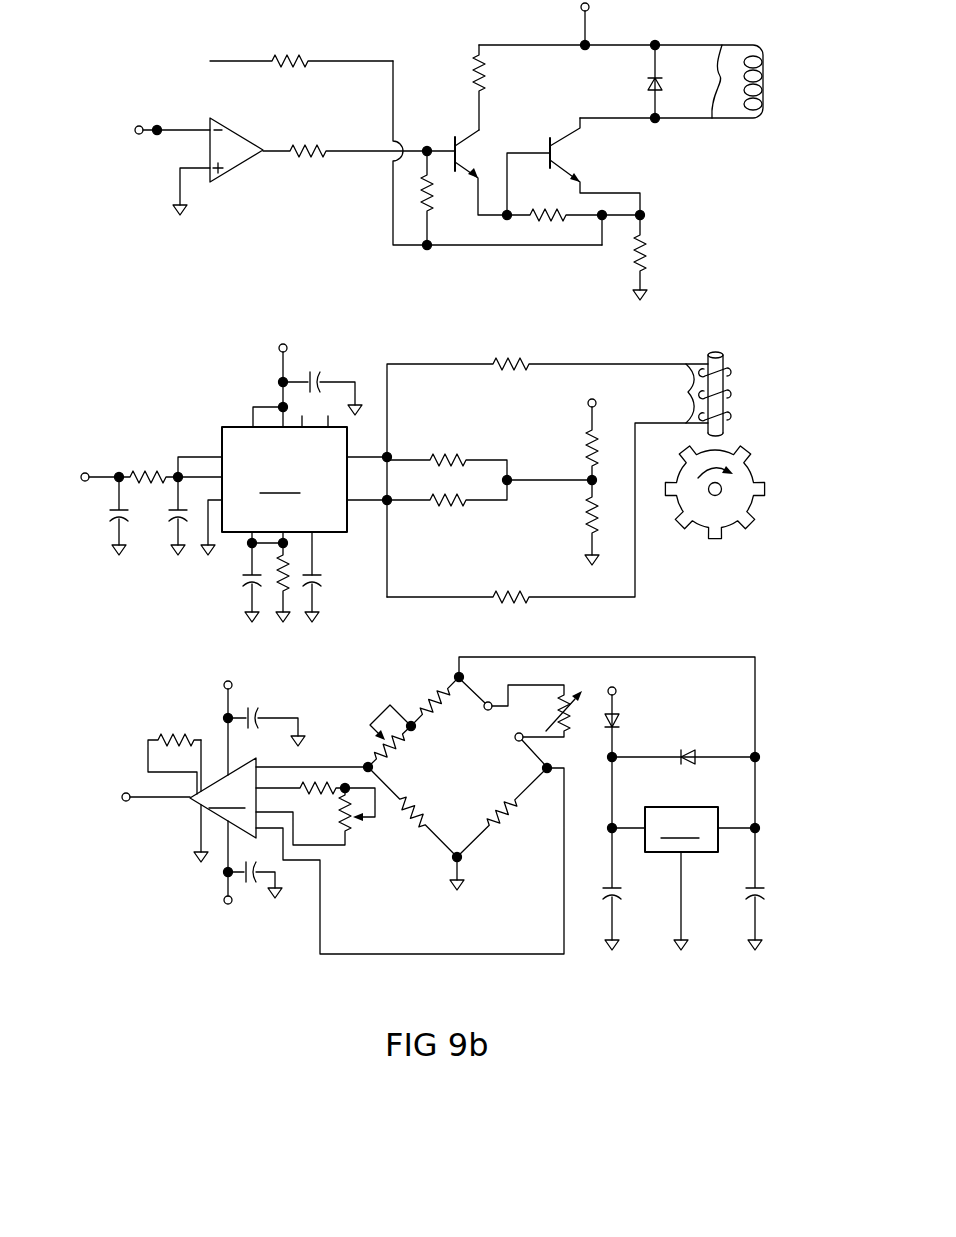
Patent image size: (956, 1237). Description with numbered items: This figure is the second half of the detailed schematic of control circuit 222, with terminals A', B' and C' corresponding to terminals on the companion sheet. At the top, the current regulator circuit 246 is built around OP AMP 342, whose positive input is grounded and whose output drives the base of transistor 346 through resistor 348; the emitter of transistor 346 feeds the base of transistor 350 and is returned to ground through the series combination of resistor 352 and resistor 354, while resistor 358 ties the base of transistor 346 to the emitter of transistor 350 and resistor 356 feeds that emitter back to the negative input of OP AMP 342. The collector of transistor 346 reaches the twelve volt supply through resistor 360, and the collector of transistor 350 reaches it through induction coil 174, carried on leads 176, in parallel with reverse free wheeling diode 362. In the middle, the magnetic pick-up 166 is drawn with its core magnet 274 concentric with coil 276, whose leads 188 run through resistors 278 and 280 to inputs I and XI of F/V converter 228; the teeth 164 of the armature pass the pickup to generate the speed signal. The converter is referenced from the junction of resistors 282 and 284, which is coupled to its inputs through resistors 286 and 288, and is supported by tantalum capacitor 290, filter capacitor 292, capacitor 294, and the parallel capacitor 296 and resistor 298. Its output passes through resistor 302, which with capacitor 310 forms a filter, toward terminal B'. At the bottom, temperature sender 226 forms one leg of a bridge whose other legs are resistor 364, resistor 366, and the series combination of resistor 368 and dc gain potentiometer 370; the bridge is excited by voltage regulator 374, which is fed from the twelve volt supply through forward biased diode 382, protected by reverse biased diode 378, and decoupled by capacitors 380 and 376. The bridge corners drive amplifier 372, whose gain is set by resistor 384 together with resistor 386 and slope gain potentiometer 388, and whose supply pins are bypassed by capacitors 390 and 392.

The control circuit 222 is at (405, 50).
The 10K ohm resistor 356 is at (292, 60).
The current regulator circuit 246 is at (232, 155).
The OP AMP 342 is at (232, 164).
The 3K ohm resistor 348 is at (313, 162).
The 510 ohm resistor 358 is at (434, 200).
The transistor 346 is at (478, 141).
The transistor 350 is at (572, 148).
The 100 ohm resistor 352 is at (540, 214).
The 0.15 ohm resistor 354 is at (655, 256).
The 60 ohm resistor 360 is at (490, 78).
The reverse free wheeling diode 362 is at (645, 86).
The leads 176 is at (716, 80).
The induction coil 174 is at (763, 79).
The F/V converter 228 is at (296, 456).
The 15 microfarad tantalum capacitor 290 is at (317, 372).
The 30K ohm resistor 302 is at (148, 466).
The 0.1 microfarad capacitor 310 is at (112, 515).
The filter capacitor 292 is at (171, 516).
The 1.0 microfarad capacitor 296 is at (246, 583).
The 51.1K ohm resistor 298 is at (293, 588).
The 0.01 microfarad capacitor 294 is at (323, 585).
The 100 ohm resistor 278 is at (512, 362).
The 100 ohm resistor 280 is at (520, 600).
The 330 ohm resistor 286 is at (438, 450).
The 330 ohm resistor 288 is at (448, 506).
The 4.7K ohm resistor 282 is at (588, 446).
The 4.7K ohm resistor 284 is at (589, 512).
The magnetic pick-up 166 is at (712, 371).
The core magnet 274 is at (708, 354).
The coil 276 is at (730, 397).
The leads 188 is at (682, 392).
The teeth 164 is at (733, 530).
The amplifier 372 is at (332, 813).
The 100K ohm resistor 384 is at (172, 732).
The 1.0 microfarad capacitor 390 is at (263, 714).
The 1.0 microfarad capacitor 392 is at (252, 886).
The 5K ohm resistor 386 is at (310, 776).
The slope gain potentiometer 388 is at (348, 828).
The 301 ohm resistor 368 is at (432, 690).
The dc gain potentiometer 370 is at (394, 746).
The temperature sender 226 is at (560, 707).
The 350 ohm resistor 366 is at (418, 812).
The 350 ohm resistor 364 is at (512, 820).
The forward biased diode 382 is at (622, 720).
The reverse biased diode 378 is at (696, 764).
The voltage regulator 374 is at (684, 878).
The 0.33 microfarad capacitor 380 is at (623, 892).
The 0.01 microfarad capacitor 376 is at (746, 896).